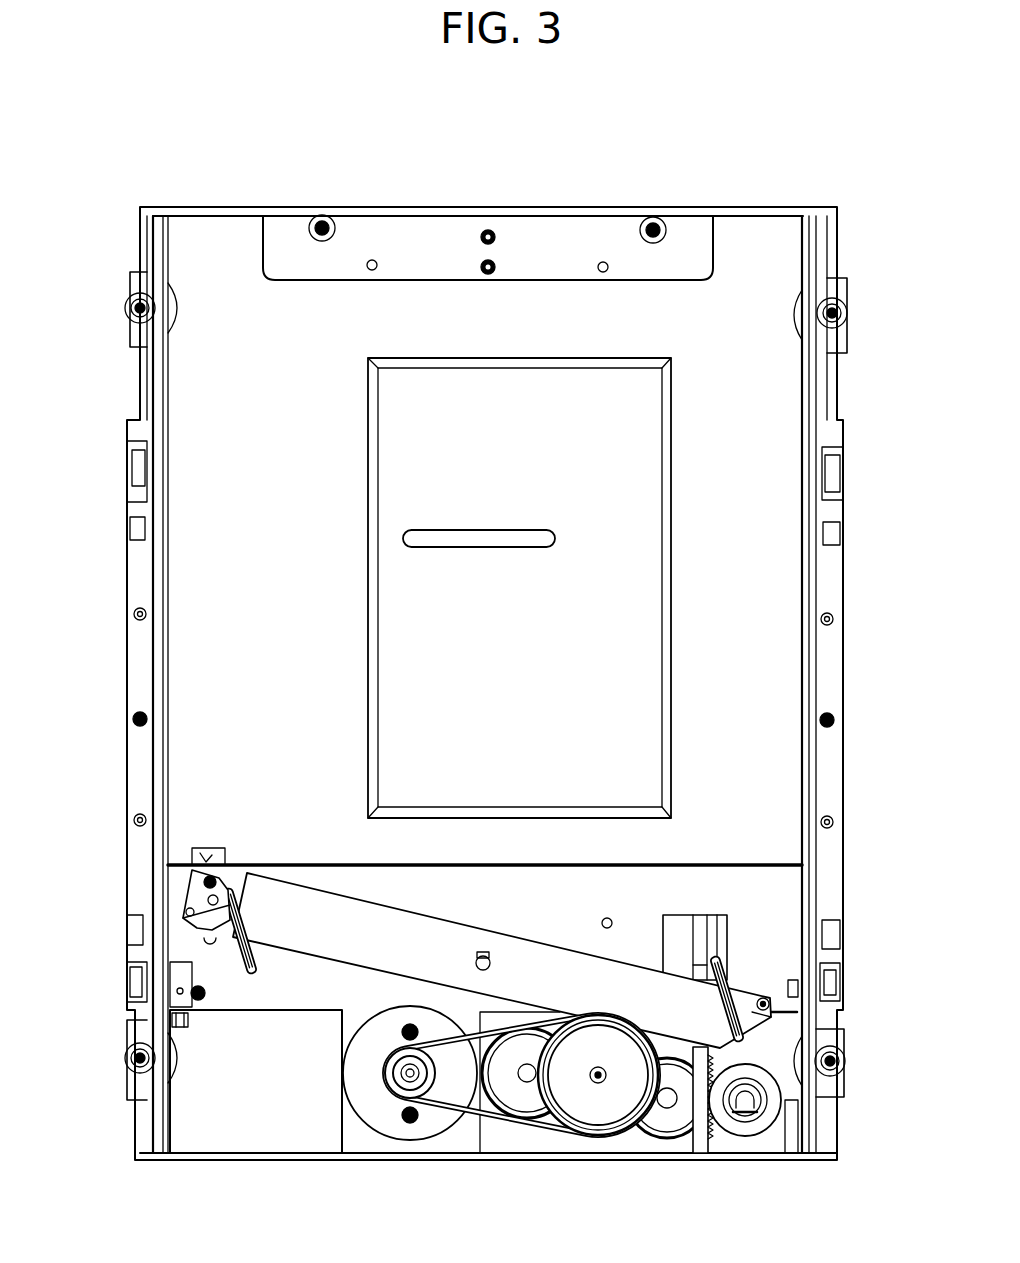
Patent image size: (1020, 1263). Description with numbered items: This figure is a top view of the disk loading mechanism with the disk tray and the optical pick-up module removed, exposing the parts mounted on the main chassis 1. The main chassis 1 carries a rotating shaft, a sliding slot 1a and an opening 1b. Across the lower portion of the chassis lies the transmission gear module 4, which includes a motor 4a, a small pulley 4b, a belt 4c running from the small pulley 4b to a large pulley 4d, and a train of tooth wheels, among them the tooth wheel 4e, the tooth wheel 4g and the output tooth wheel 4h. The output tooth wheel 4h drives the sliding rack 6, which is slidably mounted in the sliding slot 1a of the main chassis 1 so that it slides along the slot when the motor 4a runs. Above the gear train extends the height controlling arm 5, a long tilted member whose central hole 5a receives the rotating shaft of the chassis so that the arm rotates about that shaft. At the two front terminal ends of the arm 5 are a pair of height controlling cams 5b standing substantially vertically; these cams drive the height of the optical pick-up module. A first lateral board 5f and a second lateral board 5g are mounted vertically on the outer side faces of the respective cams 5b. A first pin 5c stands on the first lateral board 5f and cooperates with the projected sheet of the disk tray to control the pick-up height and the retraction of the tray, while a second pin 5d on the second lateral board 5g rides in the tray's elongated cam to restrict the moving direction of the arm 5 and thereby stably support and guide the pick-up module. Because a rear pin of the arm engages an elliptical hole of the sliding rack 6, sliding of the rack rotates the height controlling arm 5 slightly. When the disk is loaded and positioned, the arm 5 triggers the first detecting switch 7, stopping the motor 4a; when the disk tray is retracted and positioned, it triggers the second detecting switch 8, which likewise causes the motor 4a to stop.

The main chassis 1 is at (843, 663).
The sliding slot 1a is at (703, 928).
The opening 1b is at (700, 1150).
The transmission gear module 4 is at (493, 1118).
The motor 4a is at (410, 1140).
The small pulley 4b is at (398, 1088).
The belt 4c is at (462, 1110).
The large pulley 4d is at (598, 1137).
The tooth wheel 4e is at (528, 1108).
The tooth wheel 4g is at (667, 1130).
The output tooth wheel 4h is at (748, 1137).
The height controlling arm 5 is at (313, 937).
The central hole 5a is at (489, 957).
The height controlling cams 5b is at (230, 950).
The first pin 5c is at (190, 897).
The second pin 5d is at (769, 1004).
The first lateral board 5f is at (183, 920).
The second lateral board 5g is at (754, 1010).
The sliding rack 6 is at (708, 1125).
The first detecting switch 7 is at (200, 878).
The second detecting switch 8 is at (173, 1003).